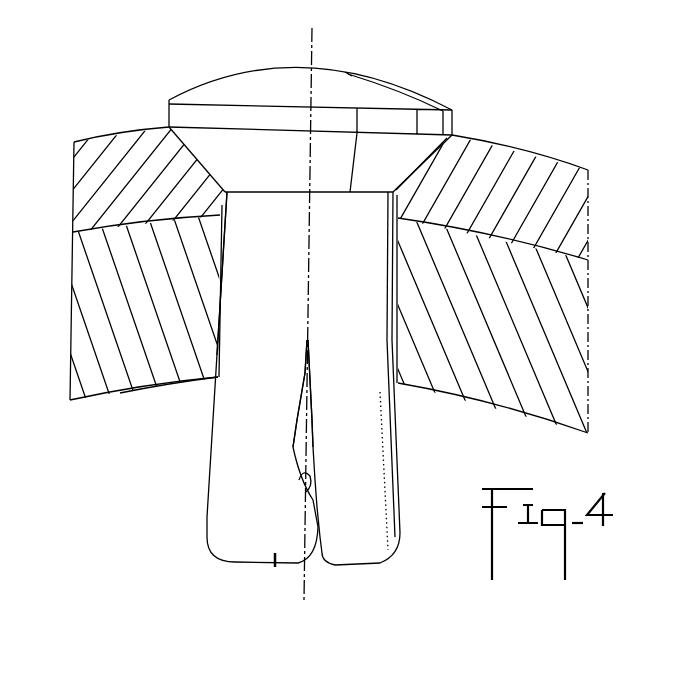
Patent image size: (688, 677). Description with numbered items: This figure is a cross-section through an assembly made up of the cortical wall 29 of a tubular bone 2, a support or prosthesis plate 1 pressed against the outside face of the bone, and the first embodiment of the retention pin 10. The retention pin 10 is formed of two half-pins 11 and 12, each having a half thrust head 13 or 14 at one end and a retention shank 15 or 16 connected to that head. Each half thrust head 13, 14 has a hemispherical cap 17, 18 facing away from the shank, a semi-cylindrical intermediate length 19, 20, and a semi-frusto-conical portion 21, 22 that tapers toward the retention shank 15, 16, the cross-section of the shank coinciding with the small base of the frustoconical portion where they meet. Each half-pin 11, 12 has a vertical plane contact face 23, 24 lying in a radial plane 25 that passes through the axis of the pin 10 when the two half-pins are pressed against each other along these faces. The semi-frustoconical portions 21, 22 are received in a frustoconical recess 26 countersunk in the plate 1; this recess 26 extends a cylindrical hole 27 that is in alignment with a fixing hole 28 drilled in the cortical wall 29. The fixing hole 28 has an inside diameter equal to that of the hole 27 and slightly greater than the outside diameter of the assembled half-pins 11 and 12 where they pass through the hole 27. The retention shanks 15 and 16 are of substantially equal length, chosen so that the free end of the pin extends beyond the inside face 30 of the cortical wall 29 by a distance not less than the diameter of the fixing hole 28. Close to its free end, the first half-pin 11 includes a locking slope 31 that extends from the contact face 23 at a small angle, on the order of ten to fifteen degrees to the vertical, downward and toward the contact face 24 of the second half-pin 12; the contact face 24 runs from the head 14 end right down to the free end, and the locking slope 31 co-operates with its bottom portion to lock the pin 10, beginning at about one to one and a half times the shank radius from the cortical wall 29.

The plate 1 is at (575, 227).
The tubular bone 2 is at (575, 375).
The retention pin 10 is at (214, 575).
The first half-pin 11 is at (275, 567).
The second half-pin 12 is at (376, 567).
The half thrust head 13 is at (204, 92).
The half thrust head 14 is at (395, 92).
The retention shank 15 is at (246, 273).
The retention shank 16 is at (359, 266).
The hemispherical cap 17 is at (257, 70).
The hemispherical cap 18 is at (350, 70).
The semi-cylindrical intermediate length 19 is at (169, 118).
The semi-cylindrical intermediate length 20 is at (455, 120).
The semi-frusto-conical portion 21 is at (197, 147).
The semi-frusto-conical portion 22 is at (412, 155).
The vertical plane contact face 23 is at (305, 372).
The vertical plane contact face 24 is at (310, 410).
The radial plane 25 is at (312, 47).
The frustoconical recess 26 is at (212, 170).
The cylindrical hole 27 is at (393, 205).
The fixing hole 28 is at (388, 294).
The cortical wall 29 is at (572, 285).
The inside face 30 is at (182, 383).
The locking slope 31 is at (305, 490).